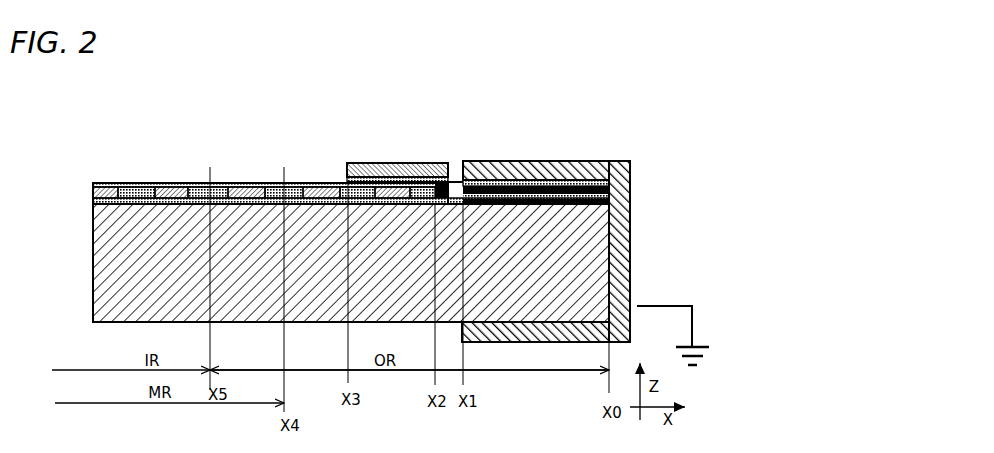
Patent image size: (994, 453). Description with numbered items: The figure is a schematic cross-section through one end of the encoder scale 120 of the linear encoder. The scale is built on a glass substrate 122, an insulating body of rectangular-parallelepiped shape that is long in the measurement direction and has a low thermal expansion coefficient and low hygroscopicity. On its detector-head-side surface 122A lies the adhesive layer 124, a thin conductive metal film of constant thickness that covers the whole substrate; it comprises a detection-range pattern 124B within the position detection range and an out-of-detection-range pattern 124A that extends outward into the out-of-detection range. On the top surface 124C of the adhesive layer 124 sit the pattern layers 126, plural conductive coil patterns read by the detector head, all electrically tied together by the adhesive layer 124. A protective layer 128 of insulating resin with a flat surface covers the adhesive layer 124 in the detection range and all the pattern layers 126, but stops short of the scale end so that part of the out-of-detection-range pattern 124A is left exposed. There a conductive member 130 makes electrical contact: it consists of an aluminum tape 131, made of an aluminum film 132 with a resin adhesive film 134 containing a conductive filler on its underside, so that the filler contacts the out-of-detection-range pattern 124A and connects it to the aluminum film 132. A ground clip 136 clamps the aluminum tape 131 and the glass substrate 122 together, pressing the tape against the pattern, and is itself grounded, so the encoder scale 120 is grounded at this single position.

The encoder scale 120 is at (324, 178).
The glass substrate 122 is at (93, 298).
The detector-head-side surface 122A is at (629, 168).
The adhesive layer 124 is at (324, 178).
The out-of-detection-range pattern 124A is at (305, 183).
The detection-range pattern 124B is at (92, 205).
The top surface of the adhesive layer 124C is at (572, 176).
The pattern layer 126 is at (178, 186).
The protective layer 128 is at (218, 186).
The conductive member 130 is at (563, 208).
The aluminum tape 131 is at (368, 144).
The aluminum film 132 is at (377, 163).
The resin adhesive film 134 is at (347, 177).
The ground clip 136 is at (541, 161).